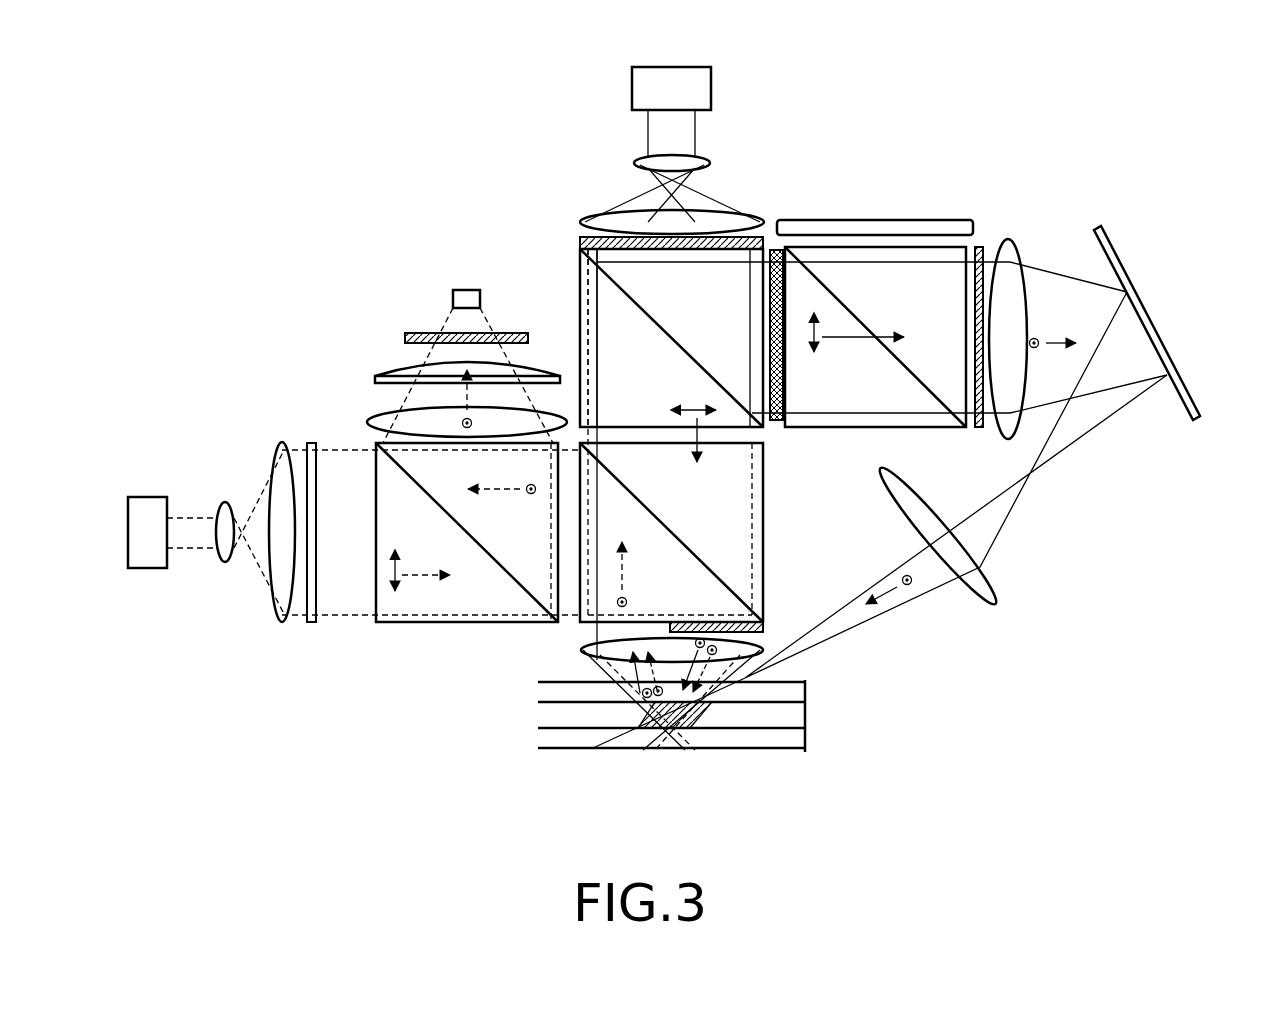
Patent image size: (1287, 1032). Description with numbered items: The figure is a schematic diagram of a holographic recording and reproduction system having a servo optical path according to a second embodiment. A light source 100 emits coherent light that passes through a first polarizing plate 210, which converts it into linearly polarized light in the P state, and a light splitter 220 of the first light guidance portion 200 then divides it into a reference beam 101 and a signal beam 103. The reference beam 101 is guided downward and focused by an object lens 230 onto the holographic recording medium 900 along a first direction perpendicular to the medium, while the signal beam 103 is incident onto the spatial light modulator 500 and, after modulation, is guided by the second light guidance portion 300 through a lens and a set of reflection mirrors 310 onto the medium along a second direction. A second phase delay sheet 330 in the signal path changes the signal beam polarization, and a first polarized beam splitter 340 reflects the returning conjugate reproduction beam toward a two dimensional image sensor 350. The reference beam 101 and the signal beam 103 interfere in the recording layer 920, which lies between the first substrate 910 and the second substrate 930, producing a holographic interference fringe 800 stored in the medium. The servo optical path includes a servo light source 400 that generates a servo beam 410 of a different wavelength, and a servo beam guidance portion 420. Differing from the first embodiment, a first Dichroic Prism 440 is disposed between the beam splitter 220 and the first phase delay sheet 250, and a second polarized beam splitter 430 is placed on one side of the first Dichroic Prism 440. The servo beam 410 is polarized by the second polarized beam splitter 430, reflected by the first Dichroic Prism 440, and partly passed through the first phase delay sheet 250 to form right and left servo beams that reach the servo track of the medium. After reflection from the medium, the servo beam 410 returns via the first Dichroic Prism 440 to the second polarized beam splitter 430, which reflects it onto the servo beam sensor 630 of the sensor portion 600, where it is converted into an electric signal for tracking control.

The light source 100 is at (732, 124).
The reference beam 101 is at (735, 437).
The signal beam 103 is at (1000, 255).
The first light guidance portion 200 is at (561, 441).
The first polarizing plate 210 is at (585, 240).
The light splitter 220 is at (580, 258).
The object lens 230 is at (405, 338).
The first phase delay sheet 250 is at (748, 626).
The second light guidance portion 300 is at (1120, 287).
The reflection mirrors 310 is at (1150, 276).
The second phase delay sheet 330 is at (980, 430).
The first polarized beam splitter 340 is at (925, 430).
The two dimensional image sensor 350 is at (873, 225).
The servo light source 400 is at (213, 466).
The servo beam 410 is at (356, 470).
The servo beam guidance portion 420 is at (770, 493).
The second polarized beam splitter 430 is at (430, 625).
The first Dichroic Prism 440 is at (762, 537).
The spatial light modulator 500 is at (772, 250).
The sensor portion 600 is at (408, 361).
The servo beam sensor 630 is at (456, 298).
The holographic interference fringe 800 is at (690, 742).
The holographic recording medium 900 is at (746, 746).
The first substrate 910 is at (790, 688).
The recording layer 920 is at (790, 715).
The second substrate 930 is at (784, 750).